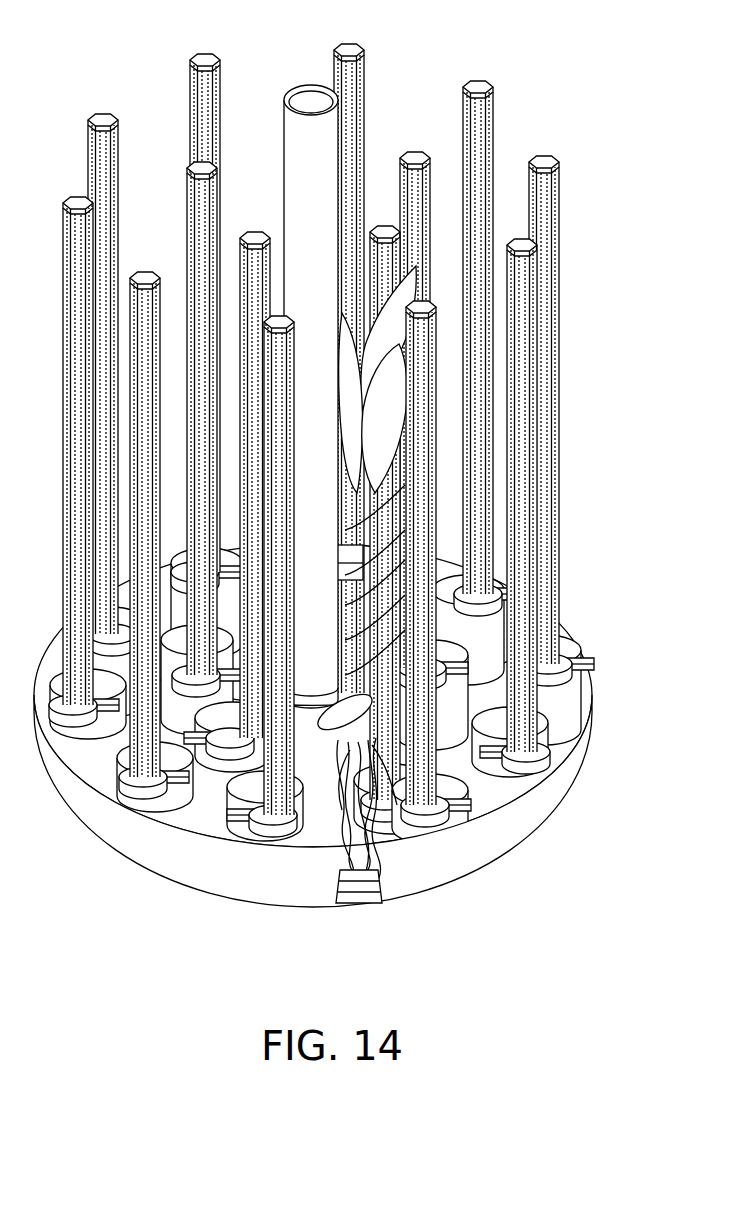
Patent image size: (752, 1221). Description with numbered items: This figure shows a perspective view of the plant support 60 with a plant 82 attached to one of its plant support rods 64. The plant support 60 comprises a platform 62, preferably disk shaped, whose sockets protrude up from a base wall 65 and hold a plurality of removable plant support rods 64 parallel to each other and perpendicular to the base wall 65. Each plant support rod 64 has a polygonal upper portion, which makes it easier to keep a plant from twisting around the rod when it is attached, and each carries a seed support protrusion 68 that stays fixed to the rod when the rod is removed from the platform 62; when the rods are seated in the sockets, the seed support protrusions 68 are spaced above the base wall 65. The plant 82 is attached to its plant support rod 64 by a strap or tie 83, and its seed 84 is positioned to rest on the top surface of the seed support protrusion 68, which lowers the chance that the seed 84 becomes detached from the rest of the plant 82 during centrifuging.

The plant support 60 is at (545, 266).
The platform 62 is at (177, 858).
The plant support rod 64 is at (383, 257).
The base wall 65 is at (463, 792).
The seed support protrusion 68 is at (405, 818).
The plant 82 is at (381, 411).
The strap or tie 83 is at (397, 560).
The seed 84 is at (313, 795).